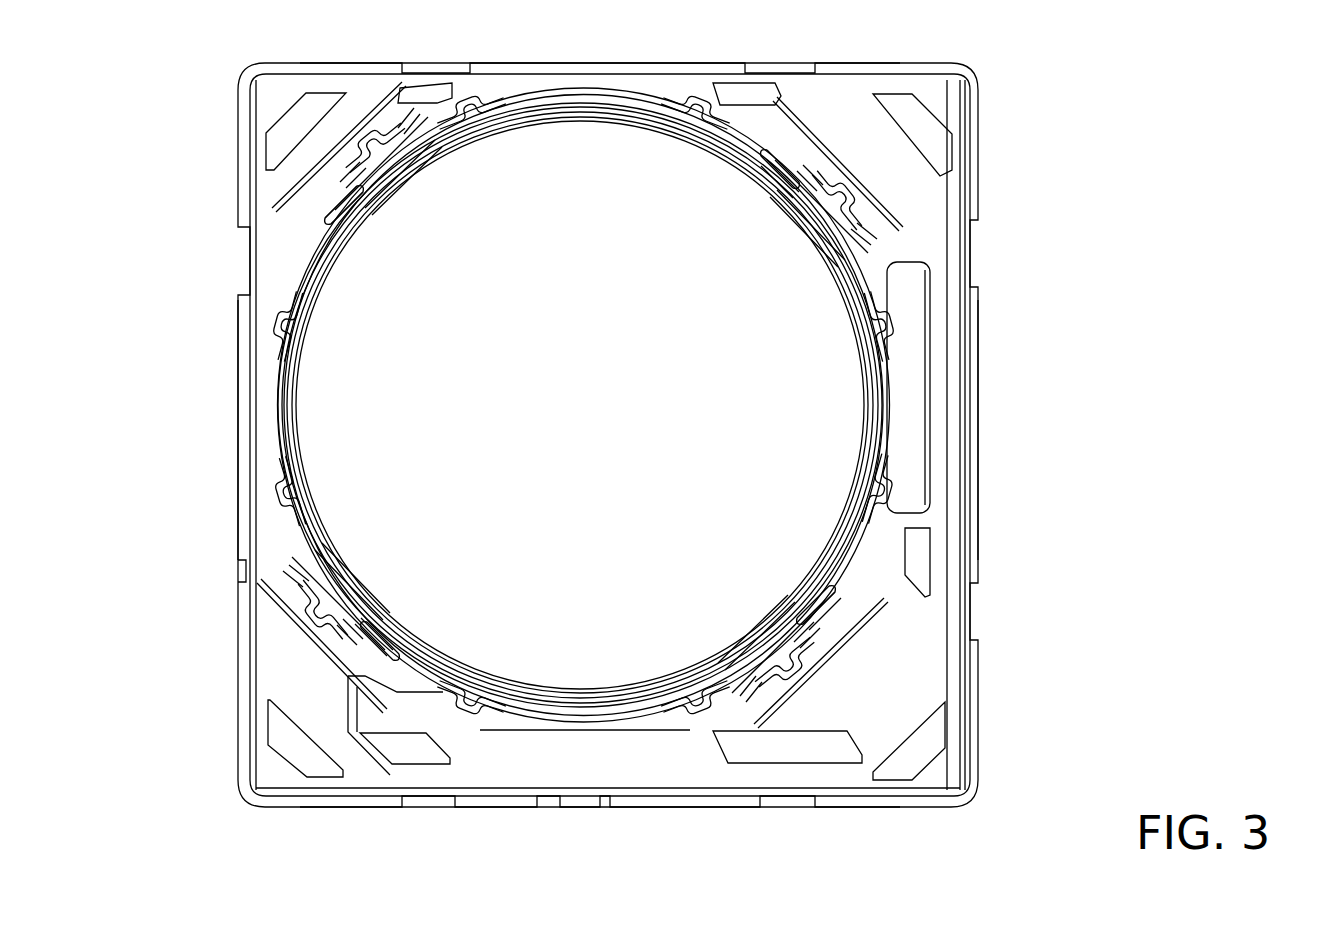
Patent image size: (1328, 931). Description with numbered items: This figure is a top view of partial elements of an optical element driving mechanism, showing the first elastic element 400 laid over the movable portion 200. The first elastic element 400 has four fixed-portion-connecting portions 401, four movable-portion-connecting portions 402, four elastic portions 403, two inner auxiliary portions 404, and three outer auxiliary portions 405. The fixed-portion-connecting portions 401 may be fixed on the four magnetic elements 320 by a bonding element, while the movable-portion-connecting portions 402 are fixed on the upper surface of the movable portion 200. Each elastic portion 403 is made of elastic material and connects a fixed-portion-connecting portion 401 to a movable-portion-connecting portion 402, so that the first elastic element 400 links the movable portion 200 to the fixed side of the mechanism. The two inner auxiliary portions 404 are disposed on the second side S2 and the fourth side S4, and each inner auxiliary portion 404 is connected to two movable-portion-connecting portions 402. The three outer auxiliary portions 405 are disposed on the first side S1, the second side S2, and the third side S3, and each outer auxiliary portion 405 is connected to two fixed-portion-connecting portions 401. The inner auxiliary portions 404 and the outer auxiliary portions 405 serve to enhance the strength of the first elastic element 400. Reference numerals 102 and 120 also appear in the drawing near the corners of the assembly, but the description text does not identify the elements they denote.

The image sensor substrate 102 is at (262, 86).
The base 120 is at (960, 85).
The magnetic element 320 is at (945, 150).
The first elastic element 400 is at (962, 418).
The movable portion 200 is at (945, 492).
The fixed-portion-connecting portion 401 is at (377, 95).
The movable-portion-connecting portion 402 is at (345, 202).
The elastic portion 403 is at (585, 88).
The inner auxiliary portion 404 is at (560, 118).
The outer auxiliary portion 405 is at (958, 565).
The first side S1 is at (988, 522).
The second side S2 is at (668, 807).
The third side S3 is at (238, 540).
The fourth side S4 is at (670, 63).